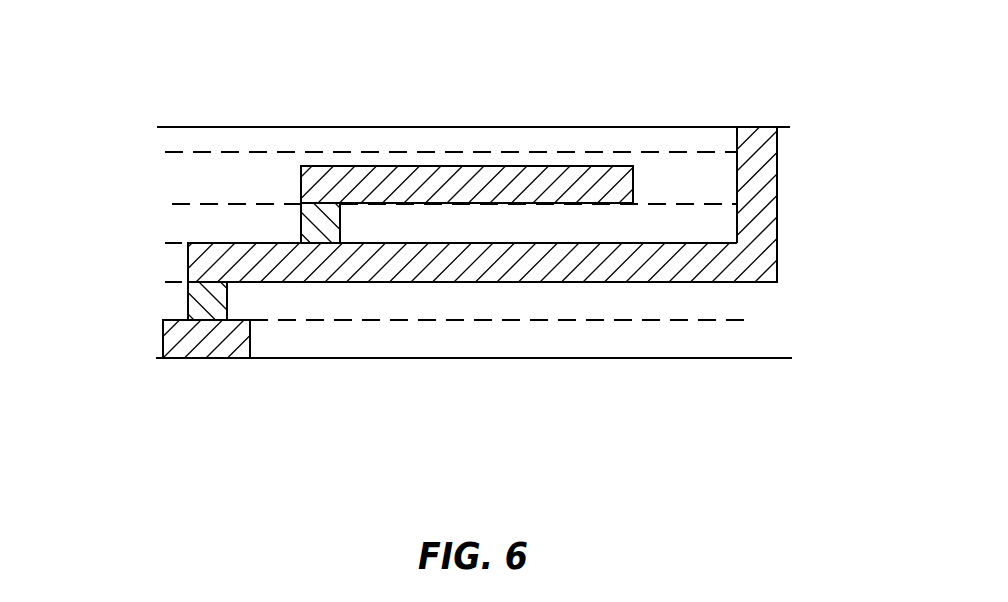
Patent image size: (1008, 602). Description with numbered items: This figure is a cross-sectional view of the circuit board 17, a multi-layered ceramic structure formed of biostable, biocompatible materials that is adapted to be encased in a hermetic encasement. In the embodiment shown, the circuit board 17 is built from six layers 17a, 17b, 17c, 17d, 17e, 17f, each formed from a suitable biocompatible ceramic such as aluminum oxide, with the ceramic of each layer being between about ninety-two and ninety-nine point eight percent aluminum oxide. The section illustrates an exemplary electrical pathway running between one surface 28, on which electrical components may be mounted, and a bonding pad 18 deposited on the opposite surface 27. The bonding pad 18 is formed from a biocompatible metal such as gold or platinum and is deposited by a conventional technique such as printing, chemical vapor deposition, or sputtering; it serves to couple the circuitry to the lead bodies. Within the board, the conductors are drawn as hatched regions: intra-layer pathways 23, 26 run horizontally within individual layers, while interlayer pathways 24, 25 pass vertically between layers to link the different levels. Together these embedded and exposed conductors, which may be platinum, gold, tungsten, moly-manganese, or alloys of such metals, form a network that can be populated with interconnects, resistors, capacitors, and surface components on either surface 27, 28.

The circuit board 17 is at (207, 77).
The first layer 17a is at (175, 142).
The second layer 17b is at (195, 183).
The third layer 17c is at (195, 227).
The fourth layer 17d is at (173, 265).
The fifth layer 17e is at (173, 303).
The sixth layer 17f is at (153, 340).
The bonding pad 18 is at (208, 340).
The intra-layer pathway 23 is at (572, 273).
The interlayer pathway 24 is at (760, 187).
The interlayer pathway 25 is at (303, 225).
The intra-layer pathway 26 is at (453, 168).
The opposite surface 27 is at (755, 358).
The surface 28 is at (757, 127).